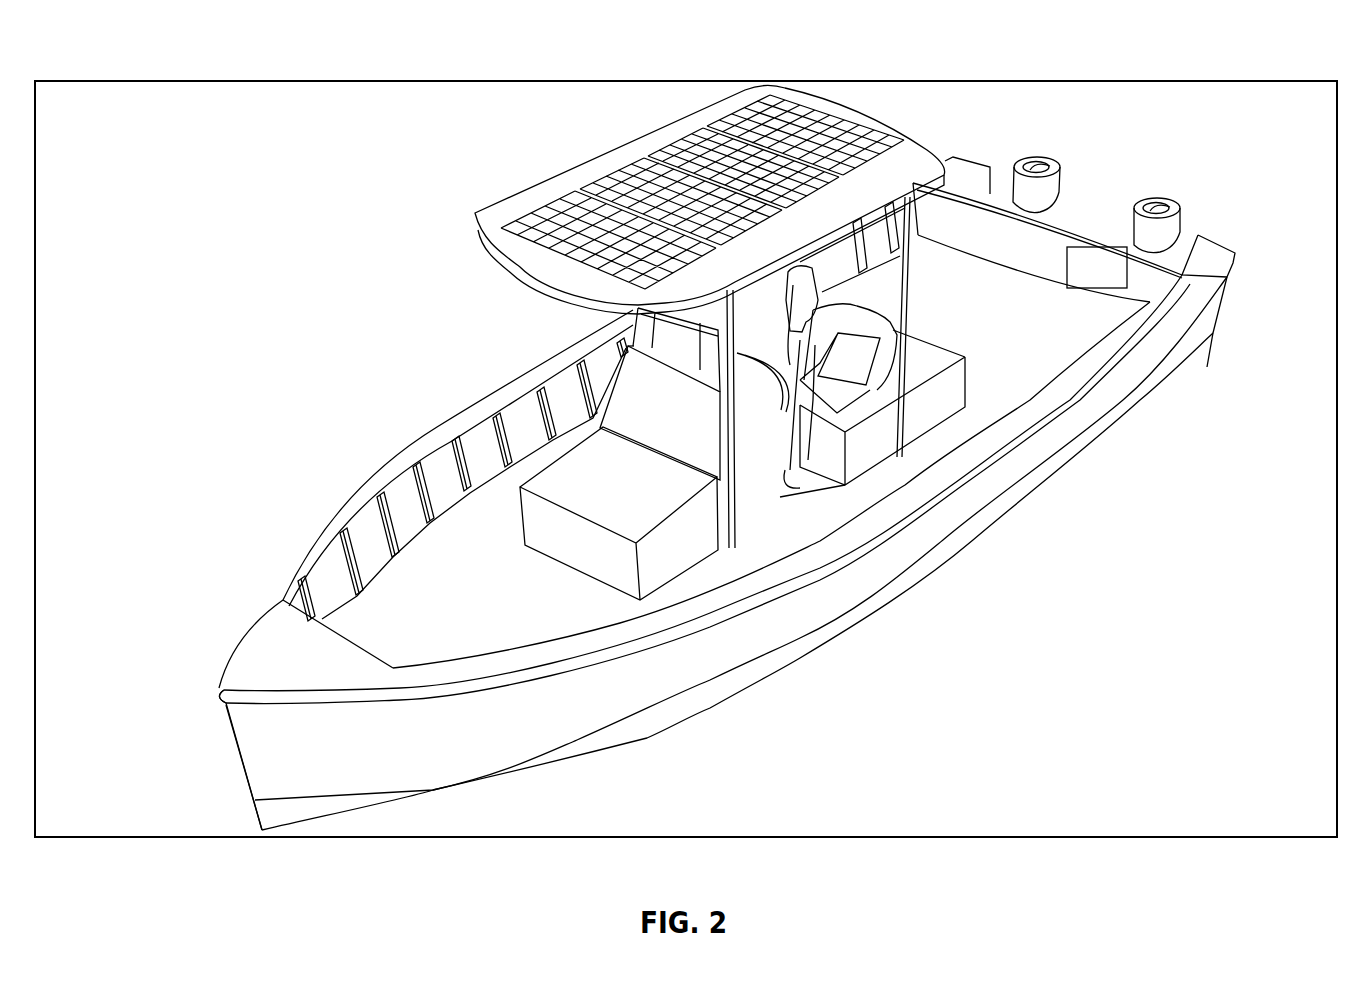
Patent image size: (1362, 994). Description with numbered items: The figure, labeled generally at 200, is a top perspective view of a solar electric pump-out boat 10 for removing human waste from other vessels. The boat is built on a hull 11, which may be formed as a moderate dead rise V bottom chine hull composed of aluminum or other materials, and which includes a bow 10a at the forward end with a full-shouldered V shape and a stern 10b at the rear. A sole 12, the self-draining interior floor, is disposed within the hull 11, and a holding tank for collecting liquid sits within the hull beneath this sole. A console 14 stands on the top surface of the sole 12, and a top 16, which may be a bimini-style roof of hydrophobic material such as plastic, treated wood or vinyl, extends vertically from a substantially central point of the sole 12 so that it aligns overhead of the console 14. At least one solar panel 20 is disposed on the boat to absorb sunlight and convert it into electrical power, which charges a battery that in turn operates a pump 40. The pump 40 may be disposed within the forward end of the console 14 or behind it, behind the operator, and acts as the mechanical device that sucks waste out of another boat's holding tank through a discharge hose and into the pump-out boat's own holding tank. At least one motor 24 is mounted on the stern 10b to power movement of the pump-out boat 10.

The marine vessel solar power system 200 is at (310, 56).
The pump-out boat 10 is at (298, 381).
The bow 10a is at (266, 633).
The stern 10b is at (1163, 287).
The hull 11 is at (471, 748).
The sole 12 is at (1011, 341).
The console 14 is at (757, 473).
The top 16 is at (497, 243).
The solar panel 20 is at (617, 165).
The motor 24 is at (1157, 203).
The pump 40 is at (638, 508).